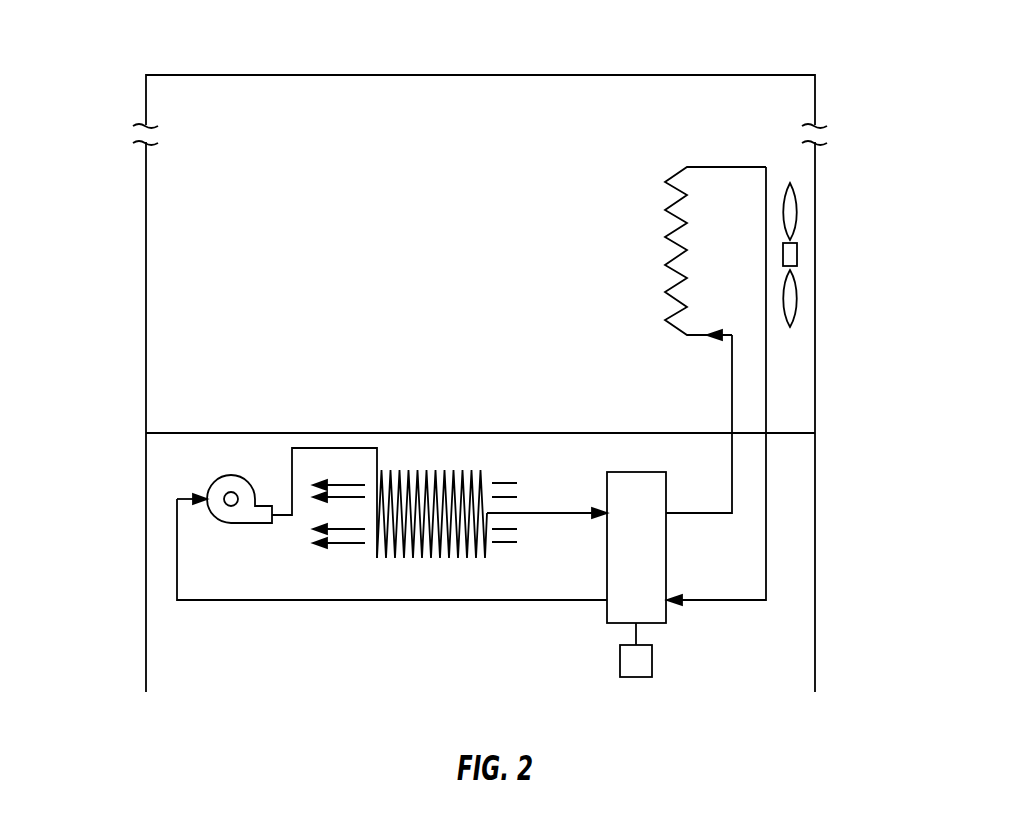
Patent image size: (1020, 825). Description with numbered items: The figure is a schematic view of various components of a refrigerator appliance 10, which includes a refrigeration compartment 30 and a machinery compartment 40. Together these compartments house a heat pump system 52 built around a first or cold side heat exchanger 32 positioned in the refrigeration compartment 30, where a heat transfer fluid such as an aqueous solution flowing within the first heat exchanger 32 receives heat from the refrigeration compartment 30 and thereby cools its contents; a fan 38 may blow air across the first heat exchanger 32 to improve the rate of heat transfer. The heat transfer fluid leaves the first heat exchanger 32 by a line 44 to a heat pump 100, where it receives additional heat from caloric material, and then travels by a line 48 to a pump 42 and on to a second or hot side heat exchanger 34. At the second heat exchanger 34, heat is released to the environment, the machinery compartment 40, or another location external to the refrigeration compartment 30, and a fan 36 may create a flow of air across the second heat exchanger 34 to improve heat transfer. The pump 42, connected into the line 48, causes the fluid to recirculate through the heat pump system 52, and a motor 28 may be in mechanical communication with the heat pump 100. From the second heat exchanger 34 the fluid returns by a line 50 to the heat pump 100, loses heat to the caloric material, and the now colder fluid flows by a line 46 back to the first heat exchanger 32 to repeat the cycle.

The refrigerator appliance 10 is at (110, 174).
The motor 28 is at (618, 658).
The refrigeration compartment 30 is at (510, 136).
The first heat exchanger 32 is at (677, 191).
The second heat exchanger 34 is at (452, 470).
The fan 36 is at (353, 484).
The fan 38 is at (795, 212).
The machinery compartment 40 is at (168, 467).
The pump 42 is at (233, 473).
The line 44 is at (766, 380).
The line 46 is at (731, 408).
The line 48 is at (320, 448).
The line 50 is at (543, 513).
The heat pump system 52 is at (458, 322).
The heat pump 100 is at (641, 462).